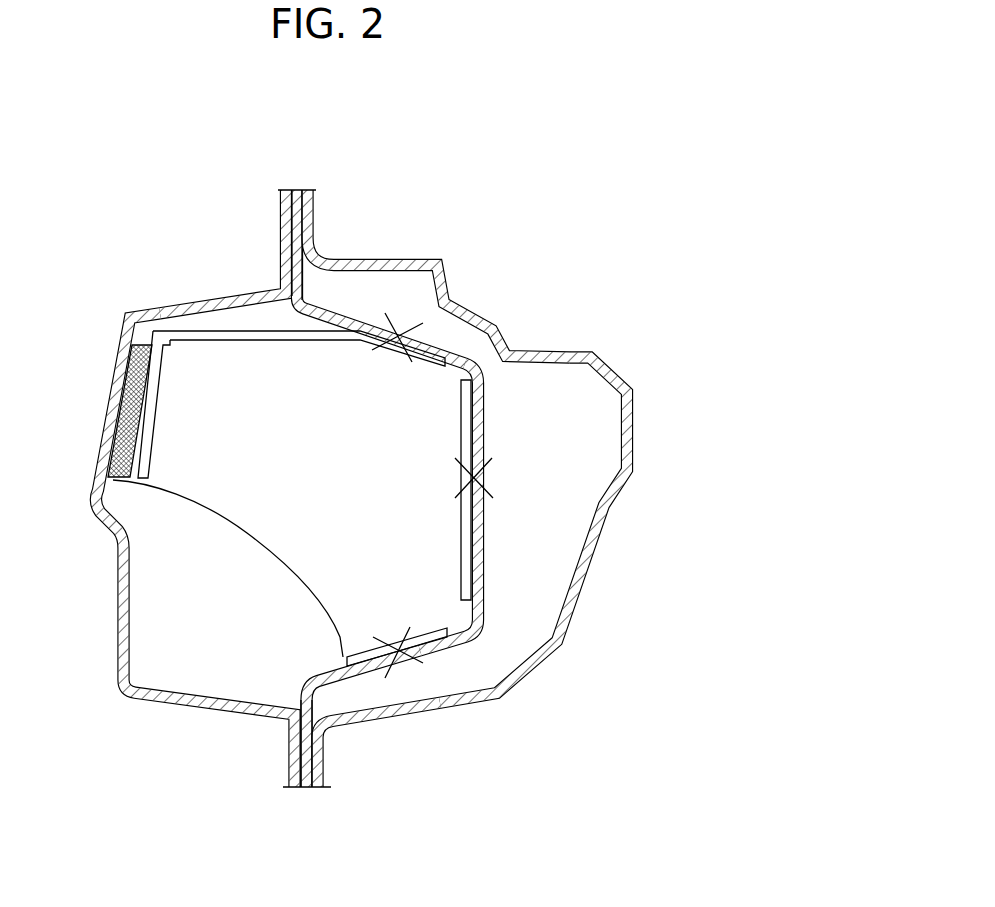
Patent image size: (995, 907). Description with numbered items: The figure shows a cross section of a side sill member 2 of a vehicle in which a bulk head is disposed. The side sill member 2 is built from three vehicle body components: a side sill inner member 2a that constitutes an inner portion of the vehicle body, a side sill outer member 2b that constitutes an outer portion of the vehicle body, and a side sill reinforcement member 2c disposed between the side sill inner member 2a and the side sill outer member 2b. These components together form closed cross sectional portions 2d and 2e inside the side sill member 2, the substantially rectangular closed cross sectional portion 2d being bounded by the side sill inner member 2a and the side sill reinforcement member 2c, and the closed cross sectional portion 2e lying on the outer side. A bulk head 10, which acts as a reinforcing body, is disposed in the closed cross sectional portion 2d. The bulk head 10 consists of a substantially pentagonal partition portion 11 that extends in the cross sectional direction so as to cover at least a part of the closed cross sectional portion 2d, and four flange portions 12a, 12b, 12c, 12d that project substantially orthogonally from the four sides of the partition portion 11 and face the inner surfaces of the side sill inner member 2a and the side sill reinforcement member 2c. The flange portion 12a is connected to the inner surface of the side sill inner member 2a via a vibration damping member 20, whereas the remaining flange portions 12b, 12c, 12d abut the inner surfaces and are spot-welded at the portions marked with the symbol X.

The side sill member 2 is at (600, 130).
The side sill inner member 2a is at (115, 605).
The side sill outer member 2b is at (563, 352).
The side sill reinforcement member 2c is at (485, 540).
The closed cross sectional portion 2d is at (243, 652).
The closed cross sectional portion 2e is at (600, 440).
The bulk head 10 is at (262, 505).
The partition portion 11 is at (198, 480).
The flange portion 12a is at (153, 417).
The flange portion 12b is at (312, 340).
The flange portion 12c is at (460, 532).
The flange portion 12d is at (425, 628).
The vibration damping member 20 is at (127, 400).